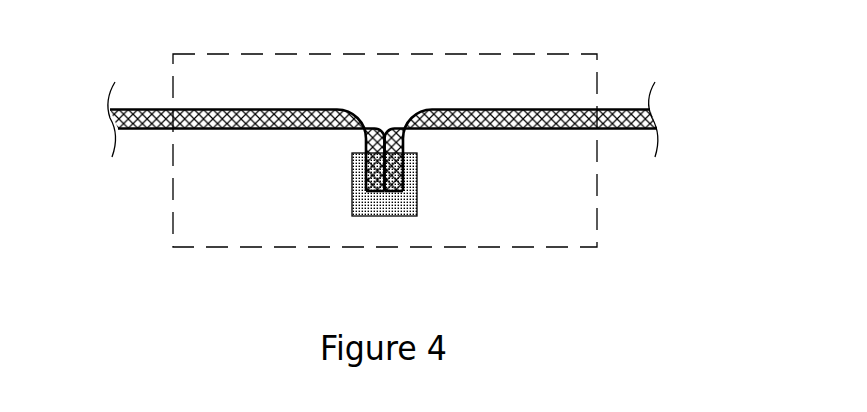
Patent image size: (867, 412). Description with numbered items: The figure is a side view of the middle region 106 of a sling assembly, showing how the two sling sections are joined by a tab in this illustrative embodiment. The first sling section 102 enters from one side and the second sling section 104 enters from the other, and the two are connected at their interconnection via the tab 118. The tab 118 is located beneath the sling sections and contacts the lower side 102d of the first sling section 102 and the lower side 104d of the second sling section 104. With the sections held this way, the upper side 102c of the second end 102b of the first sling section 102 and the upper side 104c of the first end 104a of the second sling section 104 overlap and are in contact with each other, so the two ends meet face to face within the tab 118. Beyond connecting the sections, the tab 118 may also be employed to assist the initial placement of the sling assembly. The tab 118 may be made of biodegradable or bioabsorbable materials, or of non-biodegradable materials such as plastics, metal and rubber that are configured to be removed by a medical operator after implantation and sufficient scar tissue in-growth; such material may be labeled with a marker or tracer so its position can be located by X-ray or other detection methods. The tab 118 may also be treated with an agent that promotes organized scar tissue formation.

The first sling section 102 is at (217, 149).
The second end of the first sling section 102b is at (369, 198).
The upper side of the second end of the first sling section 102c is at (306, 104).
The lower side of the first sling section 102d is at (311, 132).
The second sling section 104 is at (547, 149).
The first end of the second sling section 104a is at (401, 198).
The upper side of the first end of the second sling section 104c is at (461, 105).
The lower side of the second sling section 104d is at (451, 132).
The middle region 106 is at (598, 247).
The tab 118 is at (373, 193).